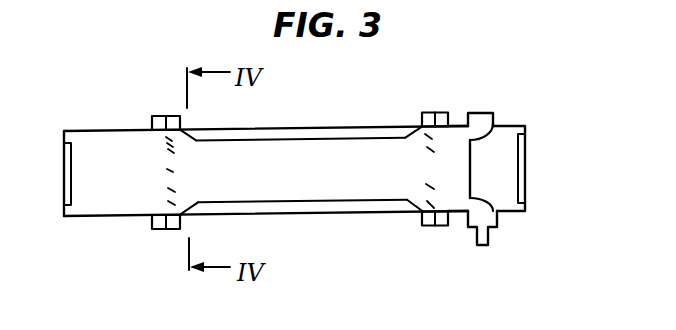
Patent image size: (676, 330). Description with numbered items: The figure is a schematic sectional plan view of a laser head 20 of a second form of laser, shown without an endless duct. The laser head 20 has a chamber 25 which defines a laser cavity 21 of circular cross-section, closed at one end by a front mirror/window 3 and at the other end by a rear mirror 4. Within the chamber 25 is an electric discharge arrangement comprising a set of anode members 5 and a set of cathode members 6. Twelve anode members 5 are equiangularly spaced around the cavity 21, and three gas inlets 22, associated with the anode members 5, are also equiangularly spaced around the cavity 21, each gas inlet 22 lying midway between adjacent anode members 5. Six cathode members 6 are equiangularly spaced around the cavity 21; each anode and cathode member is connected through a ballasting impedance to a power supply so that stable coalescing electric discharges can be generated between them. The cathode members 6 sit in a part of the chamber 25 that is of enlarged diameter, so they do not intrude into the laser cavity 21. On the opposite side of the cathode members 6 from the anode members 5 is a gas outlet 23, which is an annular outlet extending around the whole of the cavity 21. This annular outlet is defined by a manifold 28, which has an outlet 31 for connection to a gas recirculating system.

The front mirror/window 3 is at (64, 177).
The rear mirror 4 is at (525, 164).
The anode members 5 is at (172, 200).
The cathode members 6 is at (423, 118).
The laser head 20 is at (503, 113).
The laser cavity 21 is at (321, 160).
The gas inlets 22 is at (172, 155).
The gas outlet 23 is at (471, 204).
The chamber 25 is at (117, 152).
The manifold 28 is at (483, 112).
The outlet 31 is at (473, 243).